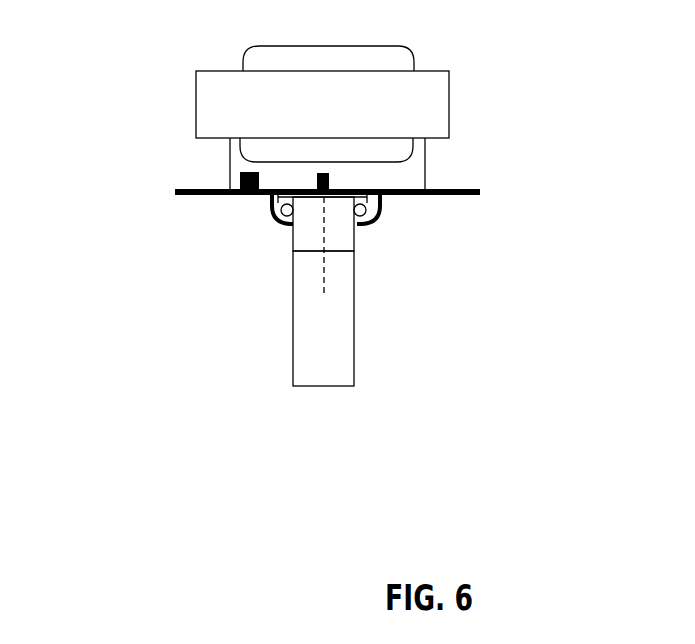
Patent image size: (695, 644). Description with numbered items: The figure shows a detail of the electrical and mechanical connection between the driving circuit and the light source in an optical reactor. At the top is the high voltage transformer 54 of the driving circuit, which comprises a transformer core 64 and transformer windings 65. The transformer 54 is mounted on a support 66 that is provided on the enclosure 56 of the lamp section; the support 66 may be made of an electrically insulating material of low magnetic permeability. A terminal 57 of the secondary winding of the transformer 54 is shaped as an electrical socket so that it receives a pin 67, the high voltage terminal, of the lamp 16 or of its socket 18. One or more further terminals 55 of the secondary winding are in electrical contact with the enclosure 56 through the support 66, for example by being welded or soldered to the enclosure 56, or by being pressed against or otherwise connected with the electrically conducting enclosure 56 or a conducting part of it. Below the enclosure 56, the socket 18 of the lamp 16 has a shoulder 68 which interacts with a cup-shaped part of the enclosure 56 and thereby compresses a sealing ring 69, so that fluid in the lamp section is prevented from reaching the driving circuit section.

The lamp 16 is at (355, 361).
The socket 18 is at (354, 240).
The high voltage transformer 54 is at (178, 112).
The terminal 55 is at (250, 195).
The enclosure 56 is at (200, 195).
The terminal 57 is at (328, 172).
The transformer core 64 is at (449, 97).
The transformer windings 65 is at (412, 55).
The support 66 is at (425, 165).
The pin 67 is at (317, 185).
The shoulder 68 is at (430, 195).
The sealing ring 69 is at (385, 215).